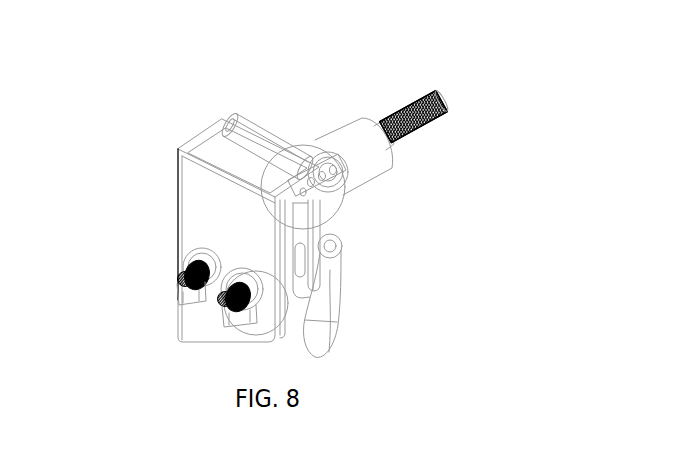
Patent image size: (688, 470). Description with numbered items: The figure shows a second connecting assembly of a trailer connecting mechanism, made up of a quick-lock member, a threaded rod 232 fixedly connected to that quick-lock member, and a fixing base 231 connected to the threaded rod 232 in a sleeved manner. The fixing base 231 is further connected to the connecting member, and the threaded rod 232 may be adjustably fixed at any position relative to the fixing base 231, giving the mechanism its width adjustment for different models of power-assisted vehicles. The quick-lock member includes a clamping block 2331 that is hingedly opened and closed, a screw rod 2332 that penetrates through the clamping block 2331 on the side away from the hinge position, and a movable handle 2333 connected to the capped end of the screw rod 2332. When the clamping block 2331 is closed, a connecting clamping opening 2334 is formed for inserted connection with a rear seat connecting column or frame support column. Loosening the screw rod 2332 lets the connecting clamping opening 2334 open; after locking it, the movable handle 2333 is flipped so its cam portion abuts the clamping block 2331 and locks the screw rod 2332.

The fixing base 231 is at (340, 138).
The threaded rod 232 is at (416, 96).
The clamping block 2331 is at (203, 203).
The screw rod 2332 is at (217, 312).
The movable handle 2333 is at (340, 323).
The connecting clamping opening 2334 is at (300, 232).